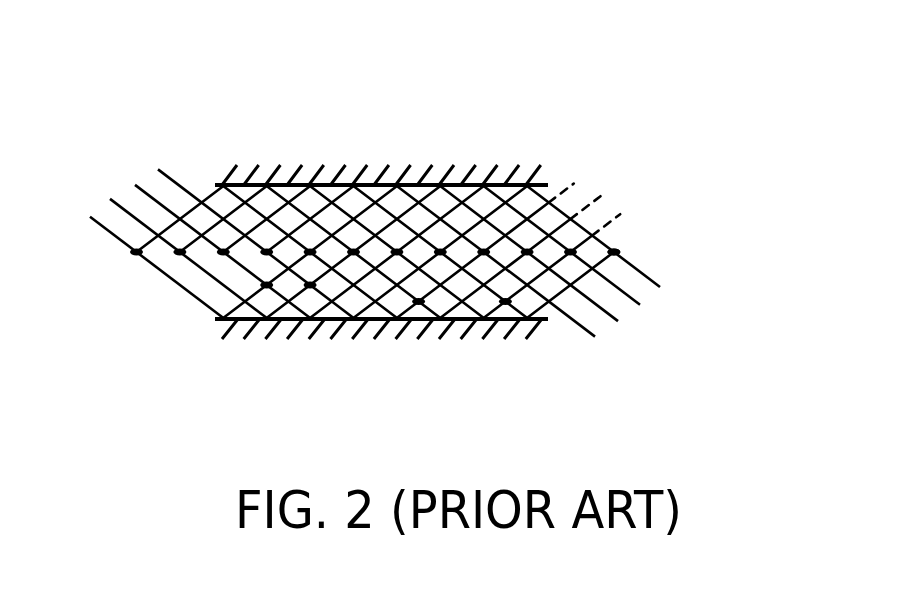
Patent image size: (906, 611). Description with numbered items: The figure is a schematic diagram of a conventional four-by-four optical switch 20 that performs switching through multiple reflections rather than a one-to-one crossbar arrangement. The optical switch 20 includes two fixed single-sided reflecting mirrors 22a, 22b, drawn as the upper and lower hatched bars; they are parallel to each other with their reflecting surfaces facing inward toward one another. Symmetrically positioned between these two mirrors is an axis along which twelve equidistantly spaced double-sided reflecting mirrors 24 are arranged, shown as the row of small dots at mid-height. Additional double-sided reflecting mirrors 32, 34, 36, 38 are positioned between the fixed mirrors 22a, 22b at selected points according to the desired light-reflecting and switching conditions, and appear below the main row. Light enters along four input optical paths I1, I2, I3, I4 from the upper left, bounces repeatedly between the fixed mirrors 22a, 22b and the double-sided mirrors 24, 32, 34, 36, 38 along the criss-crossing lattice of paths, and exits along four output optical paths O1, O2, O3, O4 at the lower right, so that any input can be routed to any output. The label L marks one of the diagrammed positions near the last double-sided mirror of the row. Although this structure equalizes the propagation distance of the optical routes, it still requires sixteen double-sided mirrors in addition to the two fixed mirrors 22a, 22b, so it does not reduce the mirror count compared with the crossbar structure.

The optical switch 20 is at (748, 55).
The single-sided reflecting mirror 22a is at (350, 183).
The single-sided reflecting mirror 22b is at (232, 334).
The double-sided reflecting mirrors 24 is at (135, 256).
The input optical path I1 is at (251, 225).
The input optical path I2 is at (213, 232).
The input optical path I3 is at (173, 245).
The input optical path I4 is at (140, 260).
The output optical path O1 is at (613, 247).
The output optical path O2 is at (578, 257).
The output optical path O3 is at (543, 269).
The output optical path O4 is at (510, 277).
The last switching node L is at (628, 252).
The double-sided reflecting mirror 32 is at (266, 287).
The double-sided reflecting mirror 34 is at (309, 287).
The double-sided reflecting mirror 36 is at (418, 303).
The double-sided reflecting mirror 38 is at (505, 303).